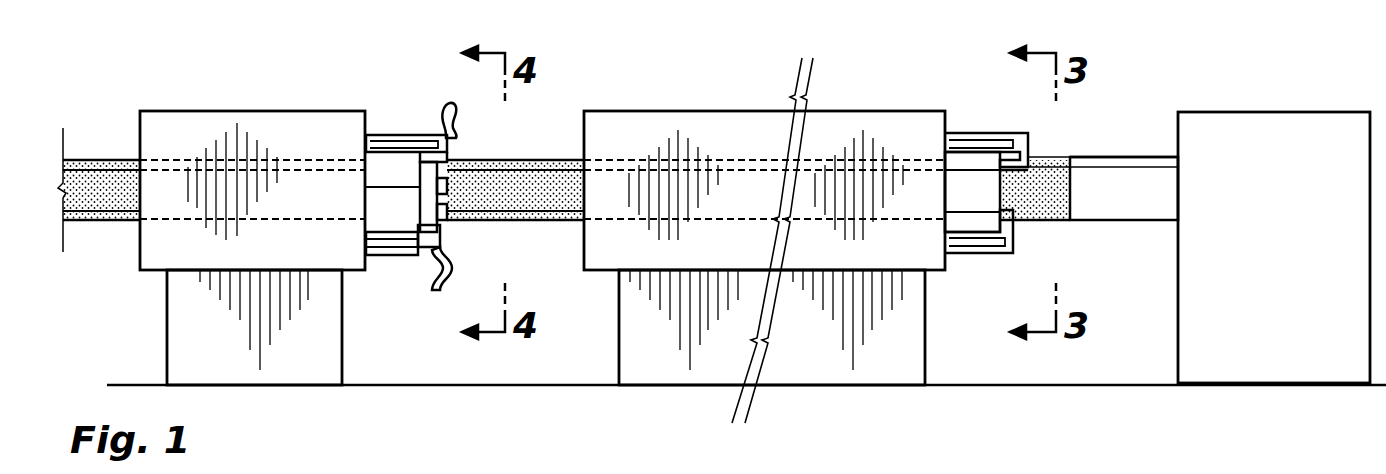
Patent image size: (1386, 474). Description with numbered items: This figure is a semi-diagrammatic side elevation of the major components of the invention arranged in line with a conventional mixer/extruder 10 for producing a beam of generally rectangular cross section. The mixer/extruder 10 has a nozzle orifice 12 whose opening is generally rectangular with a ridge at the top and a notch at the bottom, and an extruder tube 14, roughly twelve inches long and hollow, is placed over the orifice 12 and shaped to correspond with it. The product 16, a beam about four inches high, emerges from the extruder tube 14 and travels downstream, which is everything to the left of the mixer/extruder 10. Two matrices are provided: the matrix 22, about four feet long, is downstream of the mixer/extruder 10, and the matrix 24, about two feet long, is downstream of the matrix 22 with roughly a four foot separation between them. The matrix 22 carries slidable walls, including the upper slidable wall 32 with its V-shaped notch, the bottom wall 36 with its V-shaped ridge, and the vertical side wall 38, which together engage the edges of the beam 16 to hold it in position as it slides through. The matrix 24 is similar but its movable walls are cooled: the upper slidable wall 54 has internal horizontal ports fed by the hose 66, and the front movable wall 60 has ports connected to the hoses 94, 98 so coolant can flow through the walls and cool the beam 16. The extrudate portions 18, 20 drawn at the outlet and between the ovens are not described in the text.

The mixer/extruder 10 is at (1289, 138).
The nozzle orifice 12 is at (1176, 155).
The extruder tube 14 is at (1117, 163).
The product (beam) 16 is at (1047, 204).
The extrudate at outlet 18 is at (99, 190).
The extrudate between ovens 20 is at (515, 190).
The matrix 22 is at (847, 116).
The matrix 24 is at (285, 128).
The upper slidable wall 32 is at (977, 132).
The bottom slidable wall 36 is at (965, 257).
The side wall 38 is at (966, 187).
The upper slidable wall 54 is at (428, 136).
The front movable wall 60 is at (440, 205).
The hose 66 is at (465, 118).
The hose 94 is at (412, 256).
The hose 98 is at (424, 272).